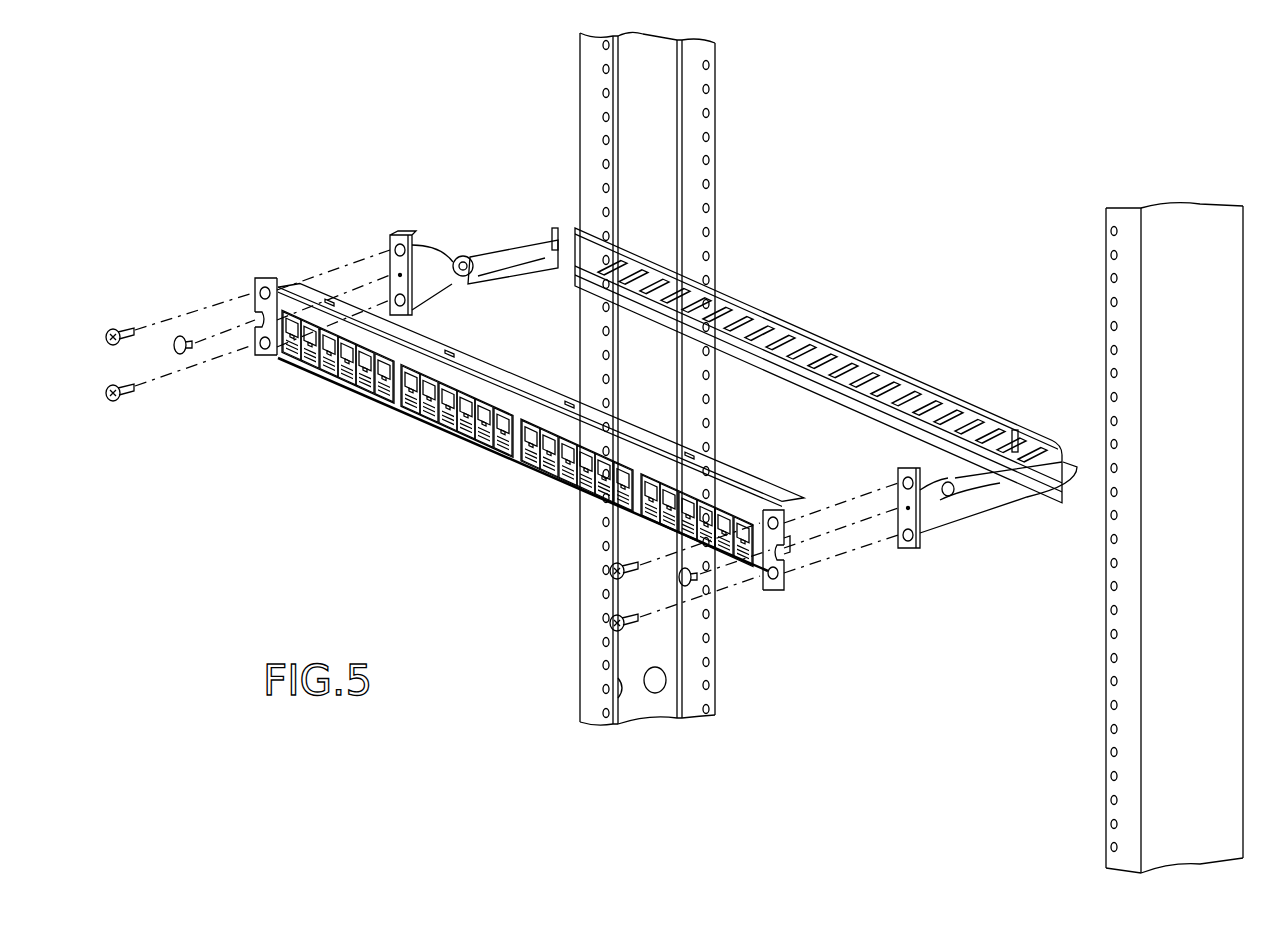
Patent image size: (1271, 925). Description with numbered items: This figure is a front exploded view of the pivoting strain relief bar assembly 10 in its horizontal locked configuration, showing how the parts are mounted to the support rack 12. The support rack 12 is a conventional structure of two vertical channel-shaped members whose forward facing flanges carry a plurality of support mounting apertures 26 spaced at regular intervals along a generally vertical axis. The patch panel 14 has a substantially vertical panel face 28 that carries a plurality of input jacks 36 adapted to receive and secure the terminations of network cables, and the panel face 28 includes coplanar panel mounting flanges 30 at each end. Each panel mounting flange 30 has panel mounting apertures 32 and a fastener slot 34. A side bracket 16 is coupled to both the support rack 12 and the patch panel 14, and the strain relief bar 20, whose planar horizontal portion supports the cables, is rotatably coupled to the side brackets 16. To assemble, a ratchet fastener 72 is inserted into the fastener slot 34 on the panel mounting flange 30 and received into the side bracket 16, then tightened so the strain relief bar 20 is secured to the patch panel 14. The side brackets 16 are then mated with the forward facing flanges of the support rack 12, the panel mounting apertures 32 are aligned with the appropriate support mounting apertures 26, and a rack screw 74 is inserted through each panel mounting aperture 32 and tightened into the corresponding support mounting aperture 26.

The pivoting strain relief bar assembly 10 is at (534, 333).
The support rack 12 is at (728, 76).
The patch panel 14 is at (400, 428).
The side bracket 16 is at (986, 535).
The strain relief bar 20 is at (822, 320).
The support mounting apertures 26 is at (1110, 231).
The panel face 28 is at (525, 462).
The panel mounting flanges 30 is at (258, 312).
The panel mounting apertures 32 is at (262, 292).
The fastener slot 34 is at (258, 318).
The input jacks 36 is at (385, 383).
The ratchet fastener 72 is at (173, 346).
The rack screw 74 is at (112, 336).